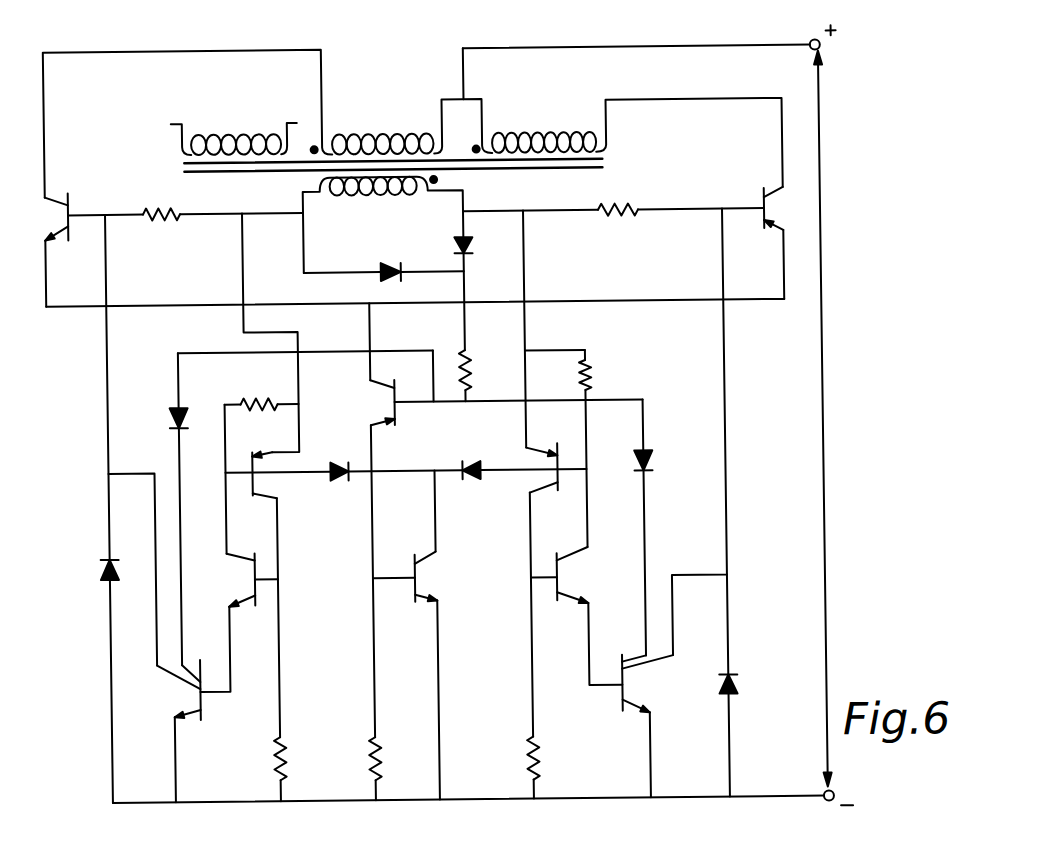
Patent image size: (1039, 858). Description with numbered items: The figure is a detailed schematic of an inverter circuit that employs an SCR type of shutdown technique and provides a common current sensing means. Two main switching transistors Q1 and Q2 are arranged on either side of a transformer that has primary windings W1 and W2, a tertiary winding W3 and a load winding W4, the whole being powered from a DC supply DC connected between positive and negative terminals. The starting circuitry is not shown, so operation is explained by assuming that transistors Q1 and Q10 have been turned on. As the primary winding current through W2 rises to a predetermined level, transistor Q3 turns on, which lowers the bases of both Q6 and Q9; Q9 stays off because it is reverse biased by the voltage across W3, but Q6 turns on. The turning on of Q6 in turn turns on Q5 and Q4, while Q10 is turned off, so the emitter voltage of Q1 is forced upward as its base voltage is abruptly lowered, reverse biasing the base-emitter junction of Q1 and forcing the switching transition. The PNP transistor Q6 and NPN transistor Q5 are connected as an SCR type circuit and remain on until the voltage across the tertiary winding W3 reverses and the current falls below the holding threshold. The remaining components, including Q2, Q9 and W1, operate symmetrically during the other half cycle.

The transistor Q1 is at (777, 208).
The transistor Q2 is at (49, 216).
The transistor Q3 is at (433, 576).
The transistor Q4 is at (648, 683).
The NPN transistor Q5 is at (578, 575).
The PNP transistor Q6 is at (529, 468).
The transistor Q9 is at (277, 474).
The transistor Q10 is at (369, 403).
The primary winding W1 is at (371, 136).
The primary winding W2 is at (534, 134).
The tertiary winding W3 is at (384, 199).
The load winding W4 is at (233, 128).
The DC supply DC is at (816, 418).